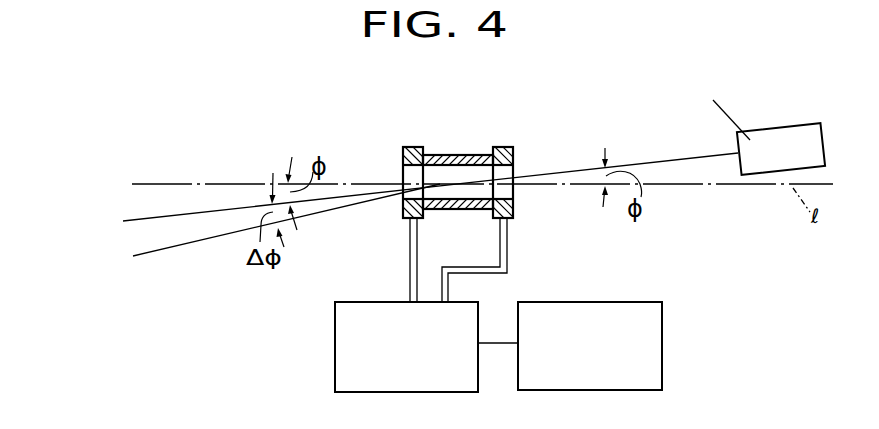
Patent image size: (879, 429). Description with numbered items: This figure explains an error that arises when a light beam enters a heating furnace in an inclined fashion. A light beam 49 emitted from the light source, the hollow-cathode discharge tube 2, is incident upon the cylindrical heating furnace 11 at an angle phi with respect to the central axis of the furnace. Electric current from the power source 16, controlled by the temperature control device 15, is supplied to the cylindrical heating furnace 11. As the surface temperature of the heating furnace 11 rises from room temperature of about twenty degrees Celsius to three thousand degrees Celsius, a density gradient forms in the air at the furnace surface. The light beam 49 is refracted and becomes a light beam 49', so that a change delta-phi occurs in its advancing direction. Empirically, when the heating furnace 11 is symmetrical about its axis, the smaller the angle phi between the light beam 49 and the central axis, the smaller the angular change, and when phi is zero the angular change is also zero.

The hollow-cathode discharge tube 2 is at (773, 127).
The cylindrical heating furnace 11 is at (448, 150).
The temperature control device 15 is at (663, 325).
The power source 16 is at (335, 333).
The light beam 49 is at (430, 171).
The refracted light beam 49' is at (286, 241).